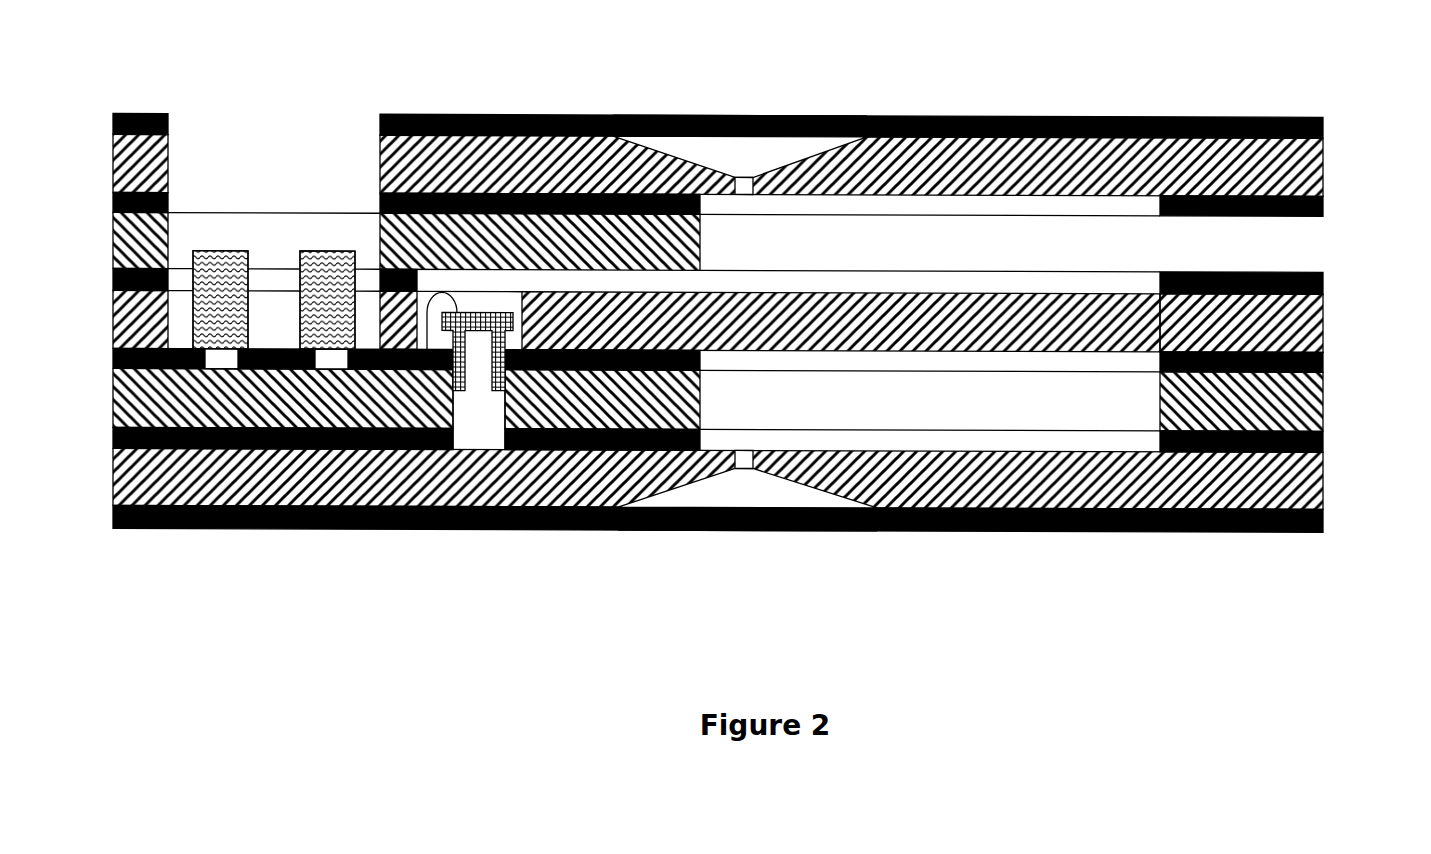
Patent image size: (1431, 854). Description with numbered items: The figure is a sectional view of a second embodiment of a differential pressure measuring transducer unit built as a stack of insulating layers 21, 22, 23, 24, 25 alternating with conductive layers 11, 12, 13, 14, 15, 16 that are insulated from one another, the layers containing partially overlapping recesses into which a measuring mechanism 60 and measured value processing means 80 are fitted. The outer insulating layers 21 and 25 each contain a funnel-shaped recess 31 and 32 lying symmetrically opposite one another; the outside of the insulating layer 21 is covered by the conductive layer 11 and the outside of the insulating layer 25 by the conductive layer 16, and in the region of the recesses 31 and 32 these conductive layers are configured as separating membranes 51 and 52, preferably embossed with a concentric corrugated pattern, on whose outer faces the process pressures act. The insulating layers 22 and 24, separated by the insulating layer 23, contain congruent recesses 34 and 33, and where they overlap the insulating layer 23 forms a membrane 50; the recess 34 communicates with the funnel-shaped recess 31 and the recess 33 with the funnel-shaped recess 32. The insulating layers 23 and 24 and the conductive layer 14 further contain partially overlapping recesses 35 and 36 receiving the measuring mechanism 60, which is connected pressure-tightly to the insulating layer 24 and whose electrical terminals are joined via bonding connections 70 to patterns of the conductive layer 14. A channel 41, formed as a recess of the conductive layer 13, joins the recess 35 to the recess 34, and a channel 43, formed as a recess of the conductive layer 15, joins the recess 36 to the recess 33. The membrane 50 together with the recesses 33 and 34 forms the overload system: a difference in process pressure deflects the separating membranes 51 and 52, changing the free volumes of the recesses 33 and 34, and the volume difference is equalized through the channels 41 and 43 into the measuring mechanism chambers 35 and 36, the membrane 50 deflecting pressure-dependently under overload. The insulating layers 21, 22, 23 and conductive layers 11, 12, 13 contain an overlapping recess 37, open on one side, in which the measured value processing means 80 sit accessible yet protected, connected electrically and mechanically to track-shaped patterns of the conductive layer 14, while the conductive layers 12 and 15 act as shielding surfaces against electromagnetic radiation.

The conductive layer 11 is at (1323, 122).
The insulating layer 21 is at (1323, 162).
The conductive layer 12 is at (1323, 200).
The insulating layer 22 is at (1323, 243).
The conductive layer 13 is at (1323, 283).
The insulating layer 23 is at (1323, 322).
The conductive layer 14 is at (1323, 358).
The insulating layer 24 is at (1323, 398).
The conductive layer 15 is at (1323, 438).
The insulating layer 25 is at (1323, 475).
The conductive layer 16 is at (1323, 513).
The funnel-shaped recess 31 is at (700, 155).
The channel 41 is at (662, 280).
The separating membrane 51 is at (770, 117).
The recess 34 is at (889, 260).
The membrane 50 is at (945, 318).
The channel 43 is at (553, 440).
The recess 33 is at (752, 410).
The funnel-shaped recess 32 is at (735, 488).
The separating membrane 52 is at (807, 532).
The bonding connection 70 is at (432, 290).
The measuring mechanism 60 is at (470, 335).
The recess 36 is at (487, 413).
The recess 35 is at (434, 333).
The recess 37 is at (257, 327).
The measured value processing means 80 is at (314, 350).